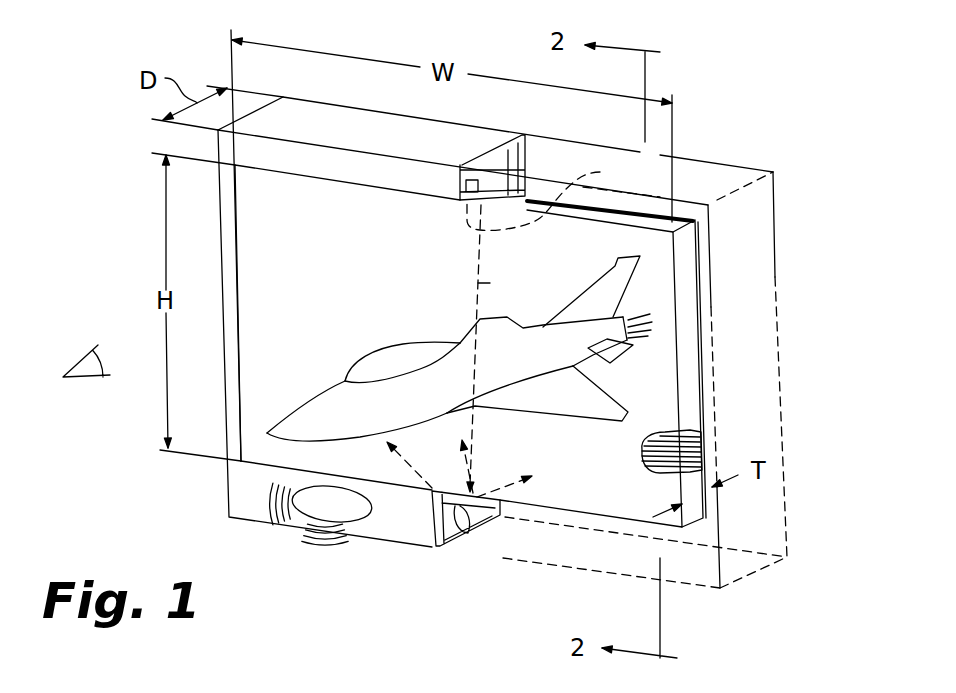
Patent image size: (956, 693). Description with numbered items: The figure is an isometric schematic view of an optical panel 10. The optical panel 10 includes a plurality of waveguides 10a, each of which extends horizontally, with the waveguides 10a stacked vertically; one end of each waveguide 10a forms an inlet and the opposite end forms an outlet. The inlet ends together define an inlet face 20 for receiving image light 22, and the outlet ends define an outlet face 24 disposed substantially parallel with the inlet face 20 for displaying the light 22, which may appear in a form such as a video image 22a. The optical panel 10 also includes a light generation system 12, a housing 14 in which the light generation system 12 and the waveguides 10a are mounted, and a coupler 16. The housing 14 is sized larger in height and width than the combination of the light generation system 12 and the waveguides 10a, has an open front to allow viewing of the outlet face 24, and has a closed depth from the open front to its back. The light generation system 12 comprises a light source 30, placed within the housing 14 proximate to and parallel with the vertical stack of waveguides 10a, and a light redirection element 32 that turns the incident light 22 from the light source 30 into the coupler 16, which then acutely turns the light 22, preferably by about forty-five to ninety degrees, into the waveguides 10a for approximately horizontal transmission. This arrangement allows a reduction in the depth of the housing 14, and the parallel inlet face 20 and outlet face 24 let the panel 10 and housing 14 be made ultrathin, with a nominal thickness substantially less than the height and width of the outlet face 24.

The optical panel 10 is at (800, 181).
The waveguides 10a is at (640, 453).
The light generation system 12 is at (524, 168).
The housing 14 is at (245, 489).
The coupler 16 is at (700, 284).
The inlet face 20 is at (714, 354).
The image light 22 is at (493, 278).
The video image 22a is at (413, 342).
The outlet face 24 is at (357, 260).
The light source 30 is at (563, 193).
The light redirection element 32 is at (445, 545).